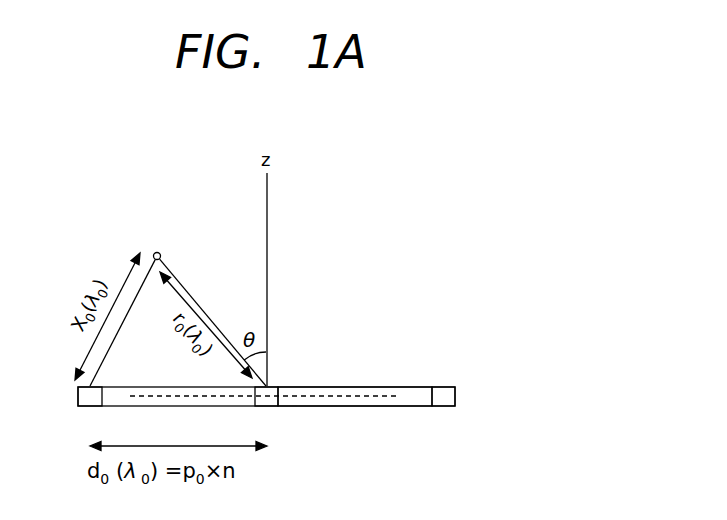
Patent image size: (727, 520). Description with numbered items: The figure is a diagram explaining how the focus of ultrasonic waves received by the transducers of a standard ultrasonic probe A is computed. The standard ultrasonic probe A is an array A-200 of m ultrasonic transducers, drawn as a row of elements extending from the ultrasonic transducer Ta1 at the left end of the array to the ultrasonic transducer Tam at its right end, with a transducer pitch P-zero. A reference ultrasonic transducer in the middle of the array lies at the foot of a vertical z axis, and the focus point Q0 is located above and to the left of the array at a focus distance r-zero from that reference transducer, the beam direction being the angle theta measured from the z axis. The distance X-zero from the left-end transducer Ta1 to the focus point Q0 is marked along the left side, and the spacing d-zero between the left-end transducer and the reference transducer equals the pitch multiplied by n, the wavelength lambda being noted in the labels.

The array A-200 is at (335, 374).
The standard ultrasonic probe A is at (358, 387).
The ultrasonic transducer at left end of array Ta1 is at (90, 413).
The ultrasonic transducer at right end of array Tam is at (445, 413).
The focus point Q0 is at (156, 241).